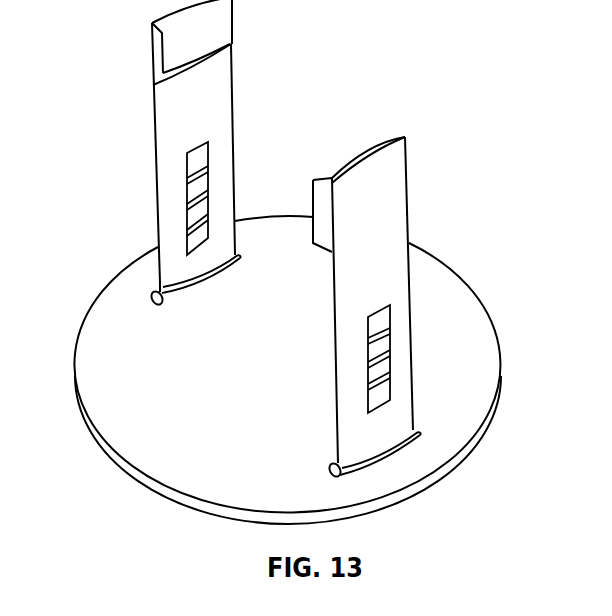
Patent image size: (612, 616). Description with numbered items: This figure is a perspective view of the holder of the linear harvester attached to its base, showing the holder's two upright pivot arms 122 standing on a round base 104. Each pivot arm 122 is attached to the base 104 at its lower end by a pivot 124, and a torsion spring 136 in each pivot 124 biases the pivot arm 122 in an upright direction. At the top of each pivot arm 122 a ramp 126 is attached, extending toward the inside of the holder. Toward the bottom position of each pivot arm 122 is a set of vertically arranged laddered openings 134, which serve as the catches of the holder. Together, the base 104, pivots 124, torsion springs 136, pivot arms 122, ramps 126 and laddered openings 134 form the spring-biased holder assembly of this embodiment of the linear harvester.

The base 104 is at (150, 486).
The pivot arm 122 is at (183, 123).
The pivot 124 is at (177, 293).
The ramp 126 is at (212, 28).
The laddered opening 134 is at (197, 180).
The torsion spring 136 is at (152, 299).